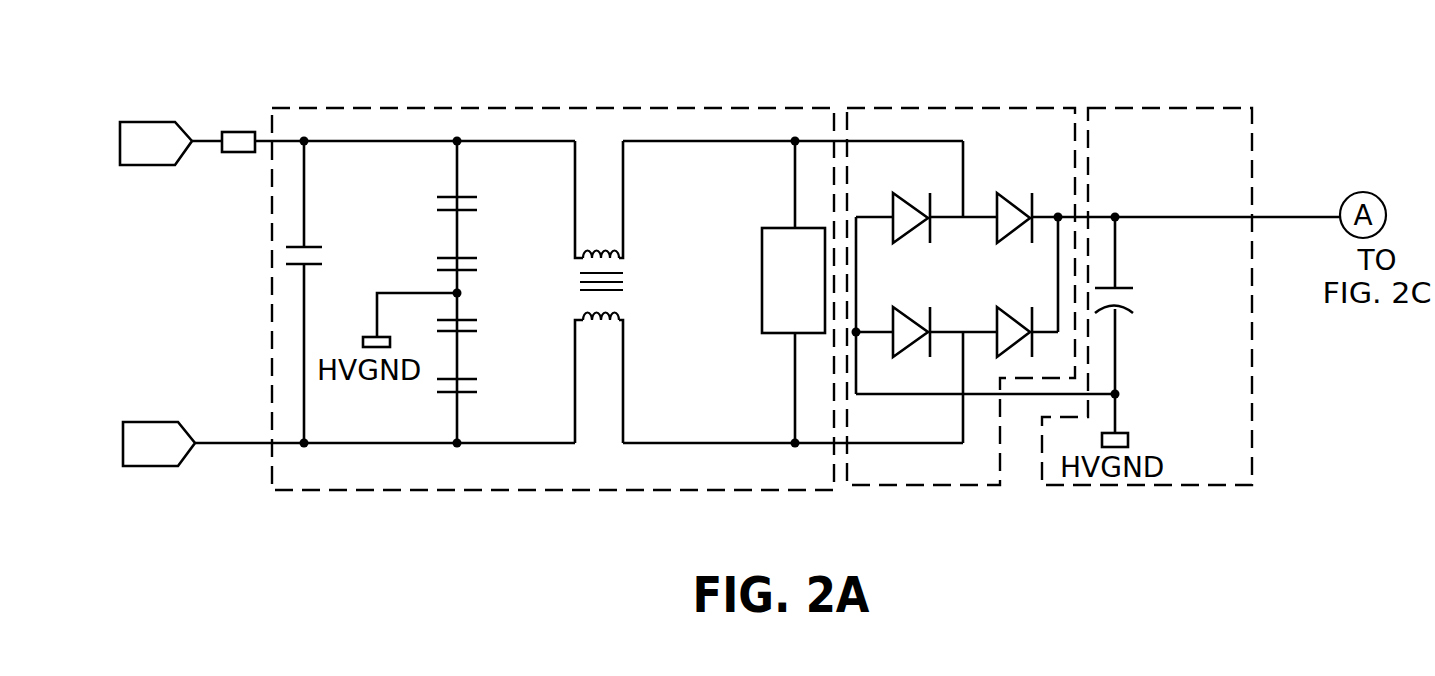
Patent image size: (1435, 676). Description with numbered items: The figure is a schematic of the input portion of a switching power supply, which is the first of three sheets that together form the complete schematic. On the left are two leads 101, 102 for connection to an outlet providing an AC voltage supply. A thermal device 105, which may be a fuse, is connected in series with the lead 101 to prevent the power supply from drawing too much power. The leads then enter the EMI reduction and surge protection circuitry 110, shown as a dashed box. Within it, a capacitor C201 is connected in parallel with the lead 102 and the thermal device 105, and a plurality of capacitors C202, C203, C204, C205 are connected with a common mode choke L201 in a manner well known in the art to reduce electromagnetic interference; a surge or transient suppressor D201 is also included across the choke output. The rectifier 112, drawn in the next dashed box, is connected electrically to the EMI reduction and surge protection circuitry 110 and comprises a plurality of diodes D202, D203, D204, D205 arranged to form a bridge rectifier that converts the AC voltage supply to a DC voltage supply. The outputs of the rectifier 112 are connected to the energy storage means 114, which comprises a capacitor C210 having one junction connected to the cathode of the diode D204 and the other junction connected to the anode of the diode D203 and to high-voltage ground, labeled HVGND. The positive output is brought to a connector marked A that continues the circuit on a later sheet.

The lead 101 is at (140, 121).
The lead 102 is at (160, 423).
The thermal device 105 is at (237, 132).
The EMI reduction and surge protection circuitry 110 is at (562, 107).
The rectifier 112 is at (966, 107).
The energy storage means 114 is at (1160, 107).
The capacitor C201 is at (329, 236).
The capacitor C202 is at (478, 194).
The capacitor C203 is at (478, 251).
The capacitor C204 is at (478, 313).
The capacitor C205 is at (478, 371).
The common mode choke L201 is at (637, 272).
The surge or transient suppressor D201 is at (762, 303).
The diode D202 is at (913, 184).
The diode D203 is at (913, 298).
The diode D204 is at (1017, 184).
The diode D205 is at (1017, 298).
The capacitor C210 is at (1149, 281).